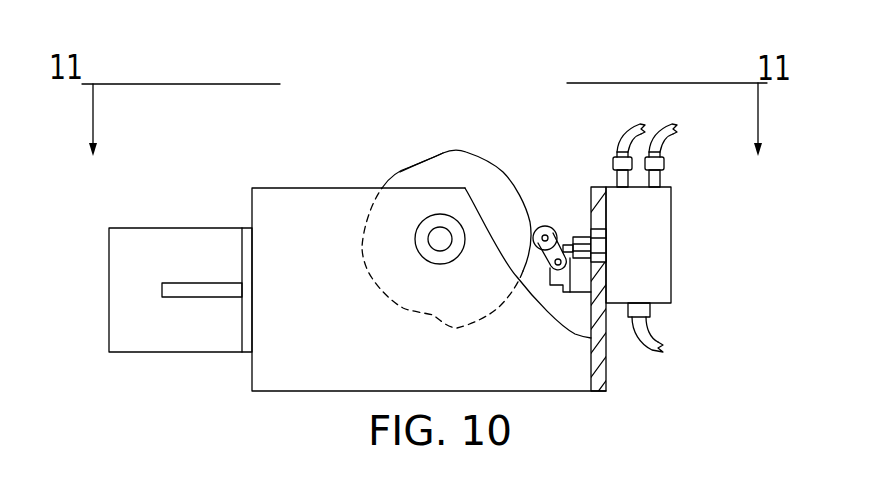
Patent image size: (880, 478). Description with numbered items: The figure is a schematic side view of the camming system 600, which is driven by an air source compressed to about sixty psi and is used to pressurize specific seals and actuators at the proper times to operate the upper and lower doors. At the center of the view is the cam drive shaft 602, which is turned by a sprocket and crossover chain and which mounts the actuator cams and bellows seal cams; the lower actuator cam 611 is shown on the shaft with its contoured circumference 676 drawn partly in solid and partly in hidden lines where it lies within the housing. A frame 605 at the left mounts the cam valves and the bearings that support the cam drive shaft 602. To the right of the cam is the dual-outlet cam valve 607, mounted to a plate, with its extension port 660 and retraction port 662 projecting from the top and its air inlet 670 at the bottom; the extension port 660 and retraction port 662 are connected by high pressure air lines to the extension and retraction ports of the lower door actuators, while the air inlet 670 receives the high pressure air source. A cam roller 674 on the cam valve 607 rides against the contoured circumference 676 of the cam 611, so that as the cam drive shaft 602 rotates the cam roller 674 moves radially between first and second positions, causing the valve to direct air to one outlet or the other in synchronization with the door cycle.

The camming system 600 is at (318, 166).
The cam drive shaft 602 is at (445, 240).
The frame 605 is at (215, 288).
The dual-outlet cam valve 607 is at (672, 218).
The lower actuator cam 611 is at (487, 177).
The extension port 660 is at (618, 150).
The retraction port 662 is at (667, 148).
The air inlet 670 is at (652, 327).
The cam roller 674 is at (543, 225).
The contoured circumference 676 is at (418, 167).